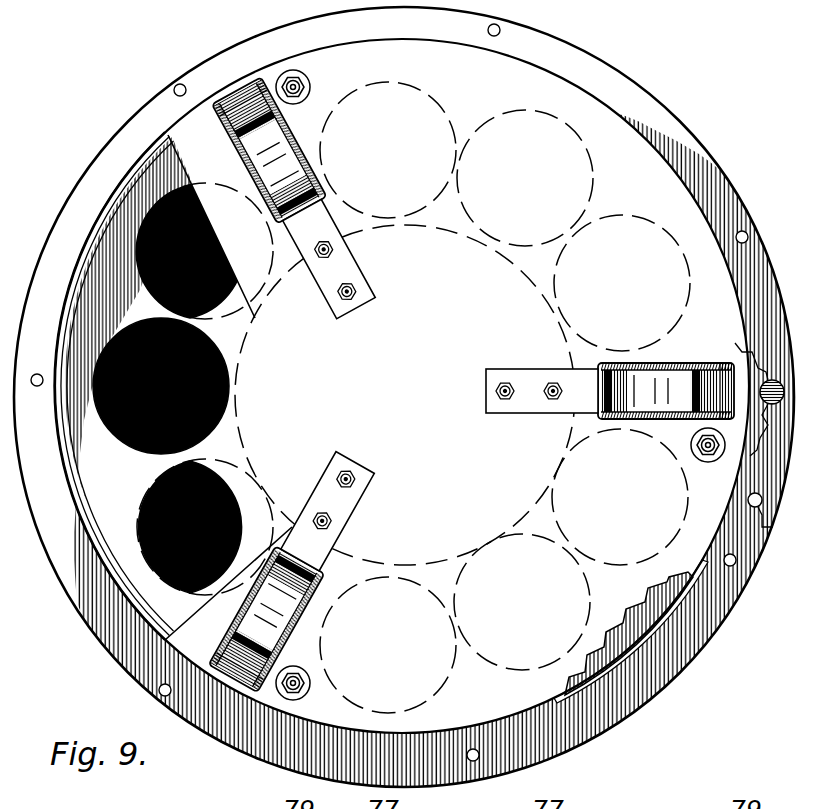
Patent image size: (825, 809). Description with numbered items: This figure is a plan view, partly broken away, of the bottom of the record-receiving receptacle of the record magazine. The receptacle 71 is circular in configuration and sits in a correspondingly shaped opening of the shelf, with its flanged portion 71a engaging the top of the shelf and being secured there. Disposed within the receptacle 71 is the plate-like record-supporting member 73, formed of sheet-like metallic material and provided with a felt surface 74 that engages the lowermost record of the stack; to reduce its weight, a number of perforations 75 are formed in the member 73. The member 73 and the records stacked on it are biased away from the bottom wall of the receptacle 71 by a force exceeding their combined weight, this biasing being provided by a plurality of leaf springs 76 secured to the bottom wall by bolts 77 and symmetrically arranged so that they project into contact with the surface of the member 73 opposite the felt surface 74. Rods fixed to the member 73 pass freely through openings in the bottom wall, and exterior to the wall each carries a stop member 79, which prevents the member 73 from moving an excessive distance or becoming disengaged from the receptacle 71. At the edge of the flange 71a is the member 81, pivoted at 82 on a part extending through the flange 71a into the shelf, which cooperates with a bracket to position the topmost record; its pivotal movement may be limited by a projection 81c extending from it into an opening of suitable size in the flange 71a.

The receptacle 71 is at (645, 655).
The flanged portion 71a is at (615, 713).
The record-supporting member 73 is at (678, 630).
The felt surface 74 is at (112, 415).
The perforations 75 is at (392, 80).
The leaf spring 76 is at (322, 222).
The bolts 77 is at (346, 300).
The stop member 79 is at (310, 86).
The member 81 is at (744, 364).
The projection 81c is at (760, 445).
The pivot 82 is at (772, 528).